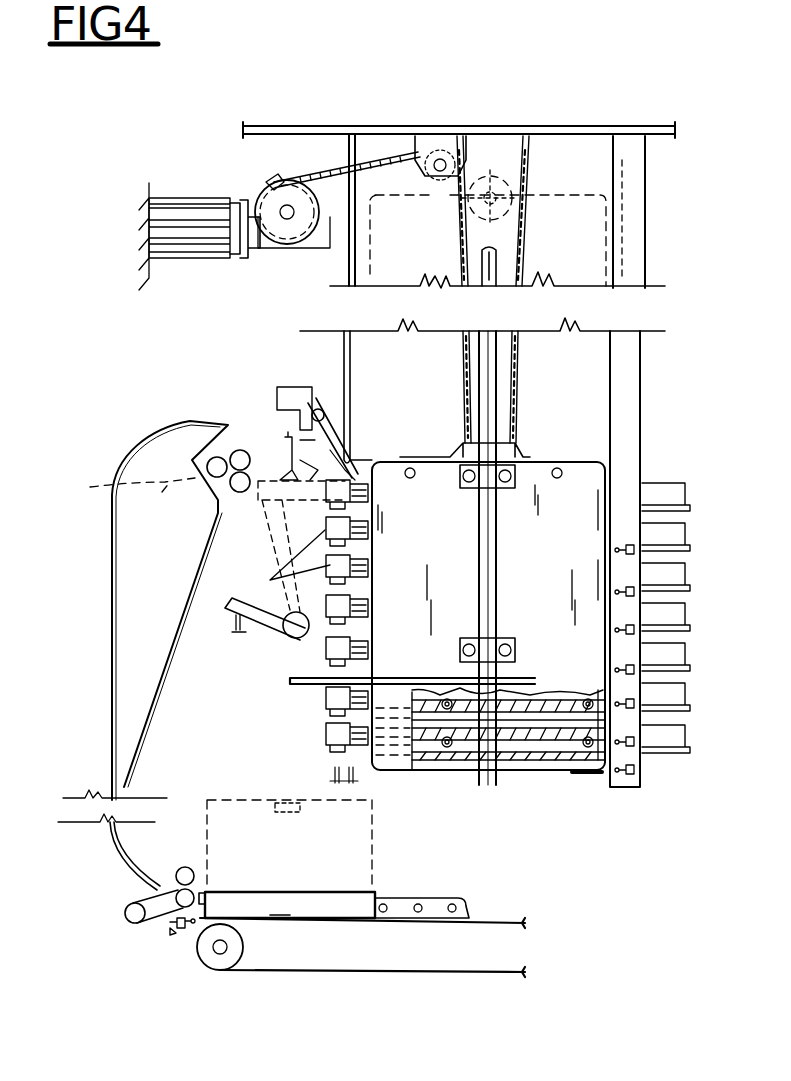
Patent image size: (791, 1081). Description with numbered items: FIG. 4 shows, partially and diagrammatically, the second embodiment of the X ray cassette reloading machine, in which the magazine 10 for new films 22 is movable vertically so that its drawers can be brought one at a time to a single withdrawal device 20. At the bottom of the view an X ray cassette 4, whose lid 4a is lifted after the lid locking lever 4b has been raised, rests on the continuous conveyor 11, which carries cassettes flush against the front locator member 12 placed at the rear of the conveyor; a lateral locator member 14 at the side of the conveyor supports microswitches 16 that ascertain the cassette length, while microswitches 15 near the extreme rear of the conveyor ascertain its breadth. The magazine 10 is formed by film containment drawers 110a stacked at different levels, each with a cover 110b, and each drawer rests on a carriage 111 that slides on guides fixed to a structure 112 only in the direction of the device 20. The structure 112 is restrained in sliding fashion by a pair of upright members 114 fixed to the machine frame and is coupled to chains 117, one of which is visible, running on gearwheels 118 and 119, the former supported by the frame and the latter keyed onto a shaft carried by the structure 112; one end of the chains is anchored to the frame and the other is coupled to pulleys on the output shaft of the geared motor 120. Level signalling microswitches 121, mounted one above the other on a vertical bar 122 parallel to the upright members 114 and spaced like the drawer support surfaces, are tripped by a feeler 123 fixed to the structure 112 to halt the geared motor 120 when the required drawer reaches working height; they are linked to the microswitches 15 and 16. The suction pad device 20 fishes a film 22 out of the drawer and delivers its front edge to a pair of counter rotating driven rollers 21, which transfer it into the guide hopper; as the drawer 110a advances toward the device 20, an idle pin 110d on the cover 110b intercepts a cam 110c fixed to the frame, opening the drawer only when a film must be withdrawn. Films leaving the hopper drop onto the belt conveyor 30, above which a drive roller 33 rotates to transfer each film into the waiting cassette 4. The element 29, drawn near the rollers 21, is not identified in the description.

The X ray cassette 4 is at (290, 905).
The lid 4a is at (376, 800).
The lid locking lever 4b is at (306, 815).
The magazine 10 is at (664, 410).
The continuous conveyor 11 is at (476, 975).
The front locator member 12 is at (207, 892).
The lateral locator member 14 is at (468, 912).
The microswitches 15 is at (172, 934).
The microswitches 16 is at (450, 903).
The withdrawal device with suction pads 20 is at (240, 425).
The counter rotating driven rollers 21 is at (233, 483).
The film 22 is at (95, 487).
The feed rollers 29 is at (210, 460).
The belt conveyor 30 is at (130, 922).
The drive roller 33 is at (175, 877).
The film containment drawers 110a is at (333, 572).
The cover 110b is at (332, 430).
The cam 110c is at (283, 416).
The idle pin 110d is at (325, 430).
The carriage 111 is at (325, 660).
The structure 112 is at (578, 532).
The upright members 114 is at (498, 598).
The chains 117 is at (326, 168).
The gearwheel 118 is at (440, 170).
The gearwheel 119 is at (495, 195).
The geared motor 120 is at (185, 218).
The level signalling microswitches 121 is at (698, 585).
The vertical bar 122 is at (631, 160).
The feeler 123 is at (582, 778).